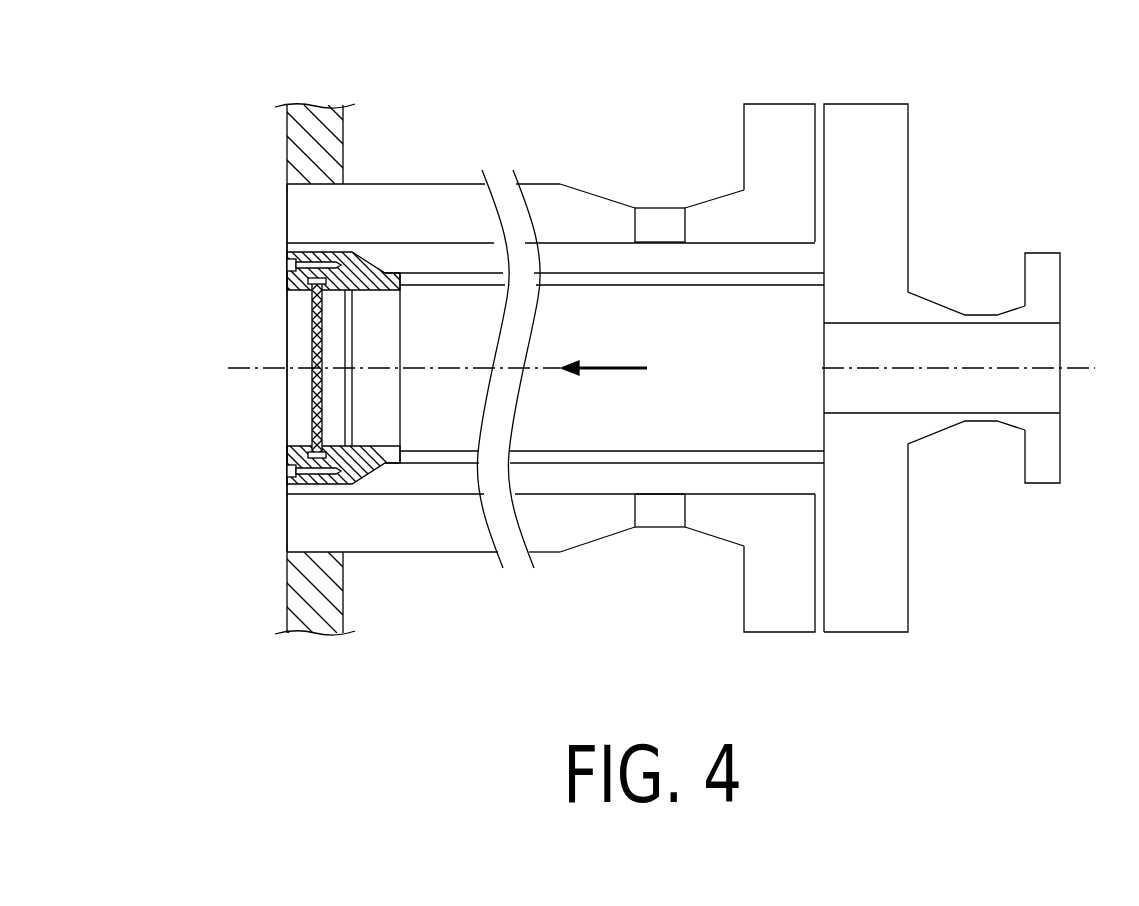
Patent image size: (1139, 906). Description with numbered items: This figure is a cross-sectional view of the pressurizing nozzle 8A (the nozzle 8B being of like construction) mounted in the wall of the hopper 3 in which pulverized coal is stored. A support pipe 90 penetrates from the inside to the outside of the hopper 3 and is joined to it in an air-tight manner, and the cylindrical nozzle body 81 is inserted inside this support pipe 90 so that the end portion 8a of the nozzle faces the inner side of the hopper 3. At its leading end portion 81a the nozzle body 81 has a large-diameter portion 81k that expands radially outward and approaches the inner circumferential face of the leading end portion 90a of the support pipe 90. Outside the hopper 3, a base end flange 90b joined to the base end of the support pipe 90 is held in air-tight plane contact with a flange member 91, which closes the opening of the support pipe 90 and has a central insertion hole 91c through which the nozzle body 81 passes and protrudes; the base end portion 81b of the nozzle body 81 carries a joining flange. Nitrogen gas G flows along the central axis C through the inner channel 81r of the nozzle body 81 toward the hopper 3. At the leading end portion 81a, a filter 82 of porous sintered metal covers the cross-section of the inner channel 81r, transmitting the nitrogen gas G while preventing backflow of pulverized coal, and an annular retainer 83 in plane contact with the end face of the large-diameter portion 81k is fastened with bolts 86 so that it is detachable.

The hopper 3 is at (287, 133).
The end portion 8a is at (287, 215).
The pressurizing nozzle 8A is at (580, 165).
The pressurizing nozzle 8B is at (714, 368).
The support pipe 90 is at (452, 184).
The leading end portion 90a is at (390, 184).
The base end flange 90b is at (778, 104).
The flange member 91 is at (863, 104).
The insertion hole 91c is at (912, 323).
The nozzle body 81 is at (573, 463).
The leading end portion 81a is at (300, 495).
The base end portion 81b is at (1040, 253).
The large-diameter portion 81k is at (333, 490).
The inner channel 81r is at (435, 437).
The filter 82 is at (312, 330).
The retainer 83 is at (292, 450).
The bolt 86 is at (290, 264).
The nitrogen gas G is at (614, 372).
The central axis C is at (1090, 372).